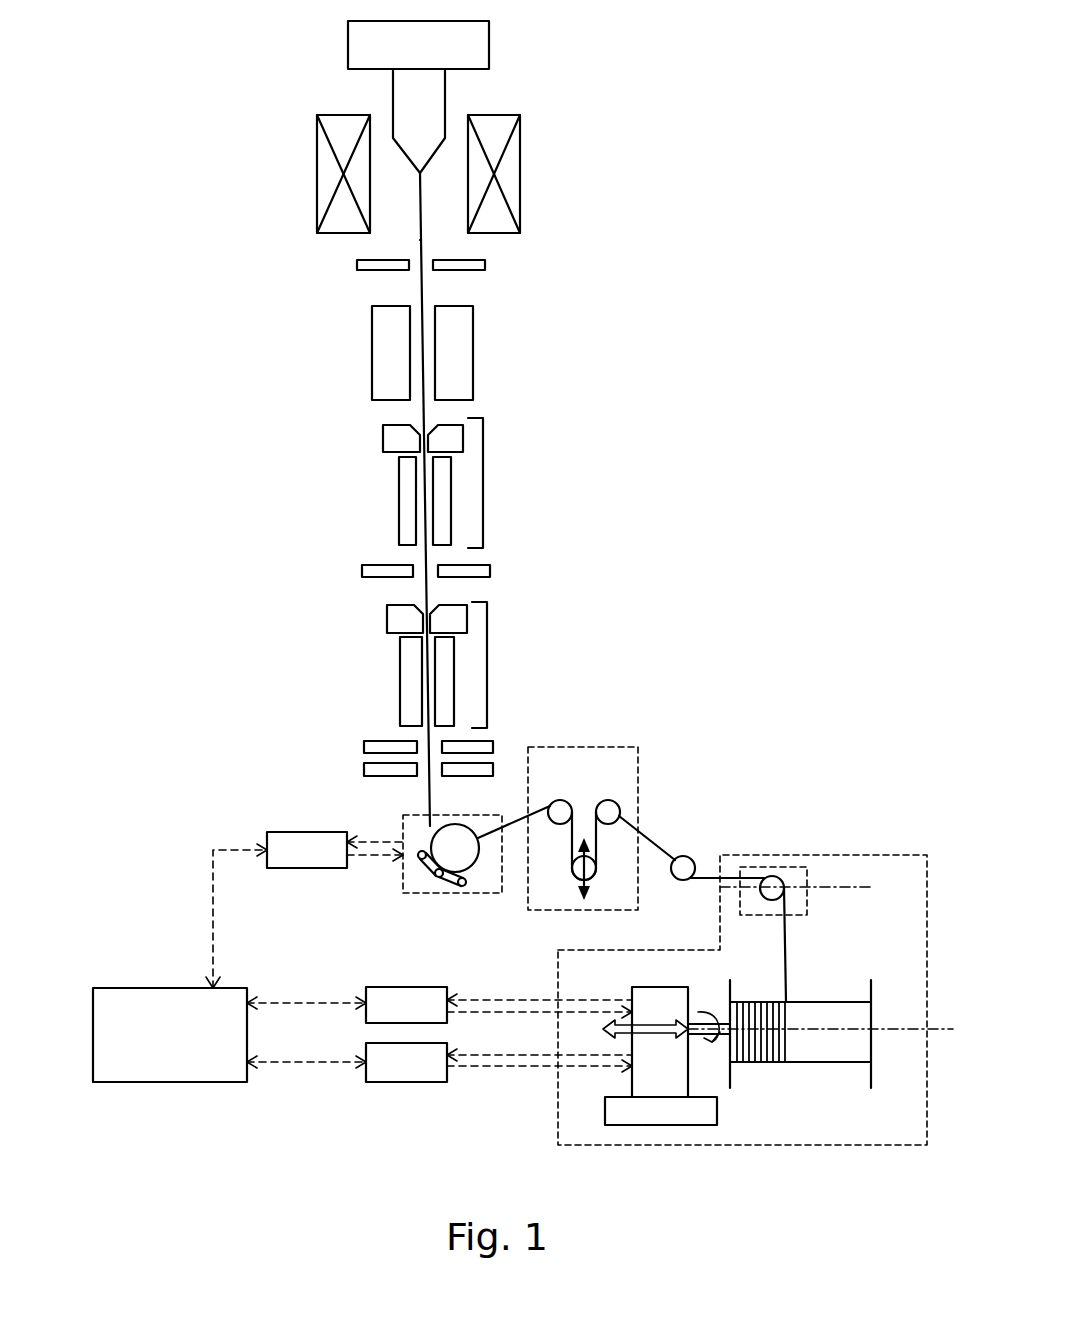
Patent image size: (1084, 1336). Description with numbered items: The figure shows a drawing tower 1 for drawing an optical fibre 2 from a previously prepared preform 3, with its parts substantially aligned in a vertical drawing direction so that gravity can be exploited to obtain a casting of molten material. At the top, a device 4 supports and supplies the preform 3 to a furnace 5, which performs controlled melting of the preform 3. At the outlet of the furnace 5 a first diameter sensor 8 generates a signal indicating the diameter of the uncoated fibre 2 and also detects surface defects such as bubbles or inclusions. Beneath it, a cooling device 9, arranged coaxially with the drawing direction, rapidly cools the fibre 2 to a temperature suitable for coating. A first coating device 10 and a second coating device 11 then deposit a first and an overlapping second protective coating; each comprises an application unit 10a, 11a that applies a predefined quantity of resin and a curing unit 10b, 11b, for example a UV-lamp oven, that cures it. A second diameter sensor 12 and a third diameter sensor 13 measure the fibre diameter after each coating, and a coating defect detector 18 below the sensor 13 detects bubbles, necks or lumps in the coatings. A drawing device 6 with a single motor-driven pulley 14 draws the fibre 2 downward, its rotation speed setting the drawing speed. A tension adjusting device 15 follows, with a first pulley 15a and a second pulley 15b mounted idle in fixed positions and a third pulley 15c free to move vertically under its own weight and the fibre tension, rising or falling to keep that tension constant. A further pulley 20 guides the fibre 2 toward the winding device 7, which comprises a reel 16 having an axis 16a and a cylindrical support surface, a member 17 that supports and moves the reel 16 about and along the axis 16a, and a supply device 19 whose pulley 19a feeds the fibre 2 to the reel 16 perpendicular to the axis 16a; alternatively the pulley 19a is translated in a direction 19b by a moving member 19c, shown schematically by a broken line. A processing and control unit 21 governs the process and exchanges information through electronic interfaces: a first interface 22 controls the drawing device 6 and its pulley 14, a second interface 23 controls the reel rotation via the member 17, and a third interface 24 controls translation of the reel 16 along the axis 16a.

The drawing tower 1 is at (685, 160).
The optical fibre 2 is at (420, 240).
The preform 3 is at (403, 97).
The device for supporting and supplying the preform 4 is at (478, 40).
The furnace 5 is at (513, 147).
The drawing device 6 is at (433, 884).
The winding device 7 is at (765, 980).
The first diameter sensor 8 is at (485, 260).
The cooling device 9 is at (387, 352).
The first coating device 10 is at (434, 483).
The application unit 10a is at (400, 436).
The curing unit 10b is at (407, 490).
The second coating device 11 is at (435, 665).
The application unit 11a is at (400, 620).
The curing unit 11b is at (408, 680).
The second diameter sensor 12 is at (485, 565).
The third diameter sensor 13 is at (478, 745).
The coating defect detector 18 is at (362, 770).
The motor-driven pulley 14 is at (468, 853).
The device for adjusting the tension of the fibre 15 is at (625, 835).
The first pulley 15a is at (560, 808).
The second pulley 15b is at (607, 808).
The third pulley 15c is at (582, 880).
The reel 16 is at (837, 1052).
The axis 16a is at (900, 1028).
The member for supporting and moving the reel 17 is at (670, 1110).
The device for supplying the fibre 19 is at (814, 856).
The pulley 19a is at (772, 876).
The direction 19b is at (840, 887).
The moving member 19c is at (805, 910).
The further pulley 20 is at (683, 880).
The processing and control unit 21 is at (128, 990).
The first interface 22 is at (395, 998).
The second control interface 23 is at (405, 1068).
The third control interface 24 is at (283, 832).